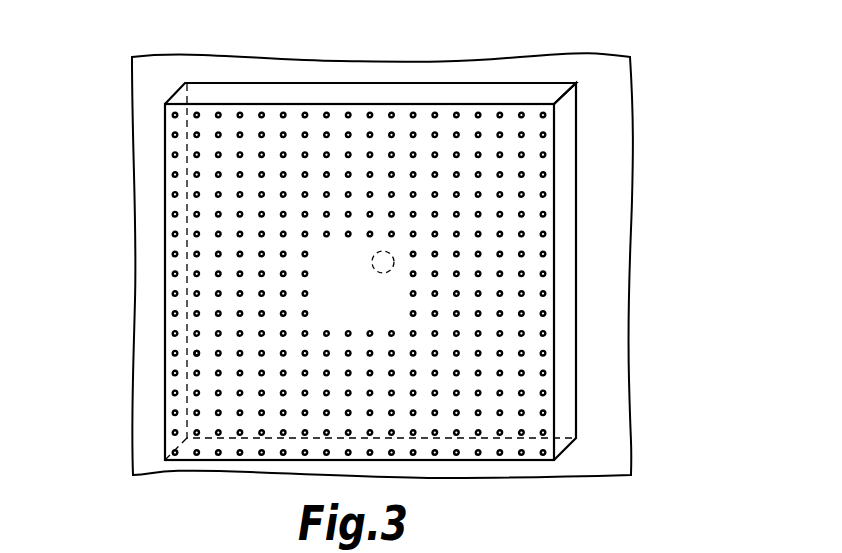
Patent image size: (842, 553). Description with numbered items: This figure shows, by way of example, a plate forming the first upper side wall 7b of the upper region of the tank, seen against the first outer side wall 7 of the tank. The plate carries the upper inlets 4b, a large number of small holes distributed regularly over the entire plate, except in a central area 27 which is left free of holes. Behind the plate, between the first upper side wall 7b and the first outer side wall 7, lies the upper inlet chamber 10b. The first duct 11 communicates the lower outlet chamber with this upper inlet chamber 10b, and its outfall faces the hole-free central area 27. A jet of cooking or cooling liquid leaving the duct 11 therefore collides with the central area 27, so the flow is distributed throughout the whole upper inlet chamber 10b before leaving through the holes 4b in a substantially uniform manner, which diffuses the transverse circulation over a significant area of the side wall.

The first outer side wall 7 is at (625, 293).
The first upper side wall 7b is at (535, 203).
The upper inlet chamber 10b is at (570, 360).
The upper inlets 4b is at (197, 353).
The central area 27 is at (328, 287).
The first duct 11 is at (385, 251).